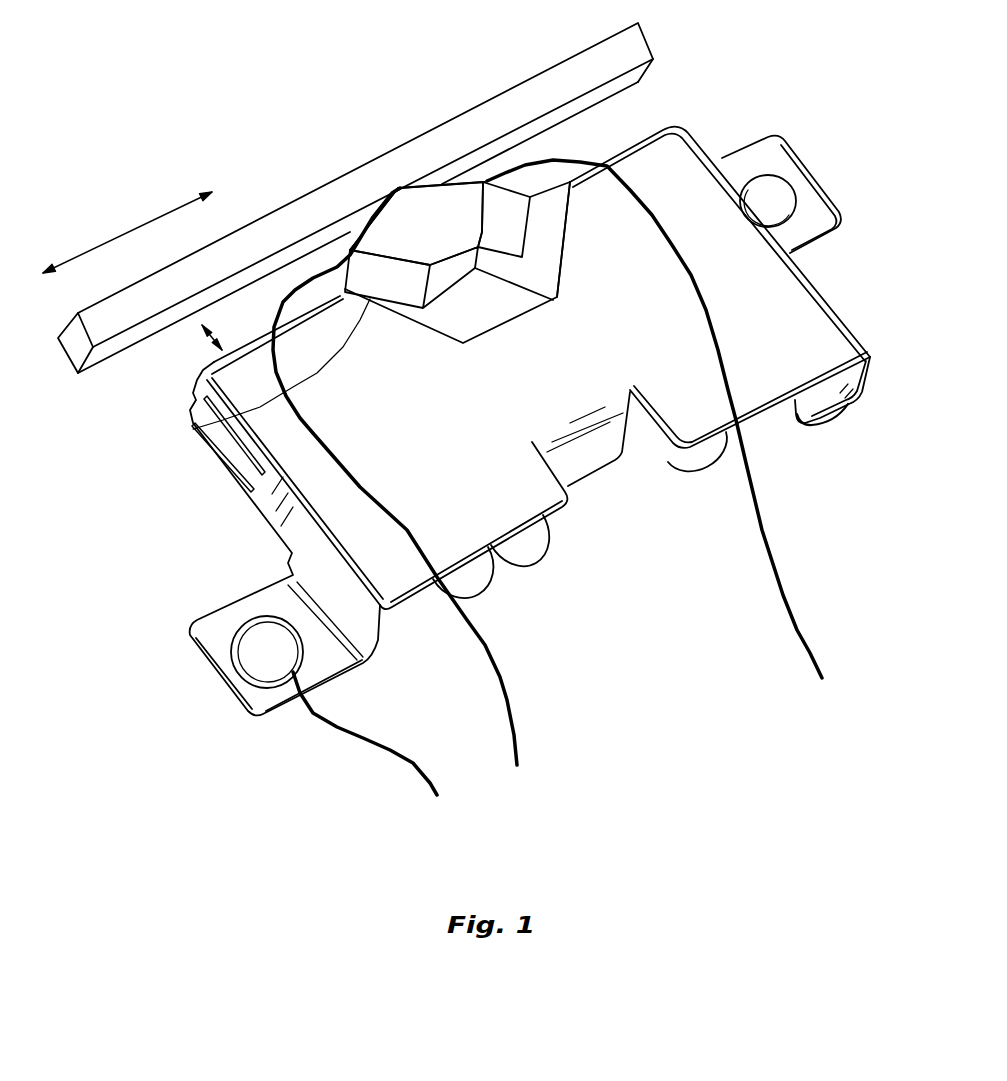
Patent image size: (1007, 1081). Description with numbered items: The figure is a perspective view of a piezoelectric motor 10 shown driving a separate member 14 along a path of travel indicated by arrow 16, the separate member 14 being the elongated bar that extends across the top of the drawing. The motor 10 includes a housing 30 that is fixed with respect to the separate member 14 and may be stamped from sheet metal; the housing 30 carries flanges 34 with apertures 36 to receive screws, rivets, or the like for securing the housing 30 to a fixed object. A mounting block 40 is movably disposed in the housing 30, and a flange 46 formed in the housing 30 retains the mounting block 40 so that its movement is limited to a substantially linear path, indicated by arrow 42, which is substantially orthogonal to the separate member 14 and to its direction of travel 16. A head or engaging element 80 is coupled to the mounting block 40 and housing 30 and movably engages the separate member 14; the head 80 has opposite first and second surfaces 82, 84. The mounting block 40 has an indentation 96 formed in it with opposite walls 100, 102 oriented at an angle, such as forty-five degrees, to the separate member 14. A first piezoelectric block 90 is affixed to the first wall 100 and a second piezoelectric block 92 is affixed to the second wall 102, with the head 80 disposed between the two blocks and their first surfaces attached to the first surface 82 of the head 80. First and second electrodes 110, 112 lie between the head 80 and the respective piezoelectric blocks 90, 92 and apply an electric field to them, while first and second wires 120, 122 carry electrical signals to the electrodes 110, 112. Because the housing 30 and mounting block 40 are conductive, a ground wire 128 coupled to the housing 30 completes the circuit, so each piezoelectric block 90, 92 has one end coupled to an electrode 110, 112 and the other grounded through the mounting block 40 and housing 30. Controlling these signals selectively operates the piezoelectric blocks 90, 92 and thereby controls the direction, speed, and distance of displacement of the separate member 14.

The piezoelectric motor 10 is at (197, 500).
The separate member 14 is at (227, 250).
The arrow 16 is at (121, 232).
The housing 30 is at (292, 525).
The flanges 34 is at (840, 218).
The apertures 36 is at (790, 190).
The mounting block 40 is at (778, 415).
The arrow 42 is at (210, 340).
The flange 46 is at (597, 460).
The head 80 is at (412, 205).
The first surface 82 is at (403, 305).
The second surface 84 is at (490, 230).
The first piezoelectric block 90 is at (380, 270).
The second piezoelectric block 92 is at (500, 202).
The indentation 96 is at (477, 280).
The first wall 100 is at (193, 423).
The second wall 102 is at (575, 240).
The first electrode 110 is at (348, 246).
The second electrode 112 is at (482, 183).
The first wire 120 is at (500, 675).
The second wire 122 is at (763, 547).
The ground wire 128 is at (360, 740).